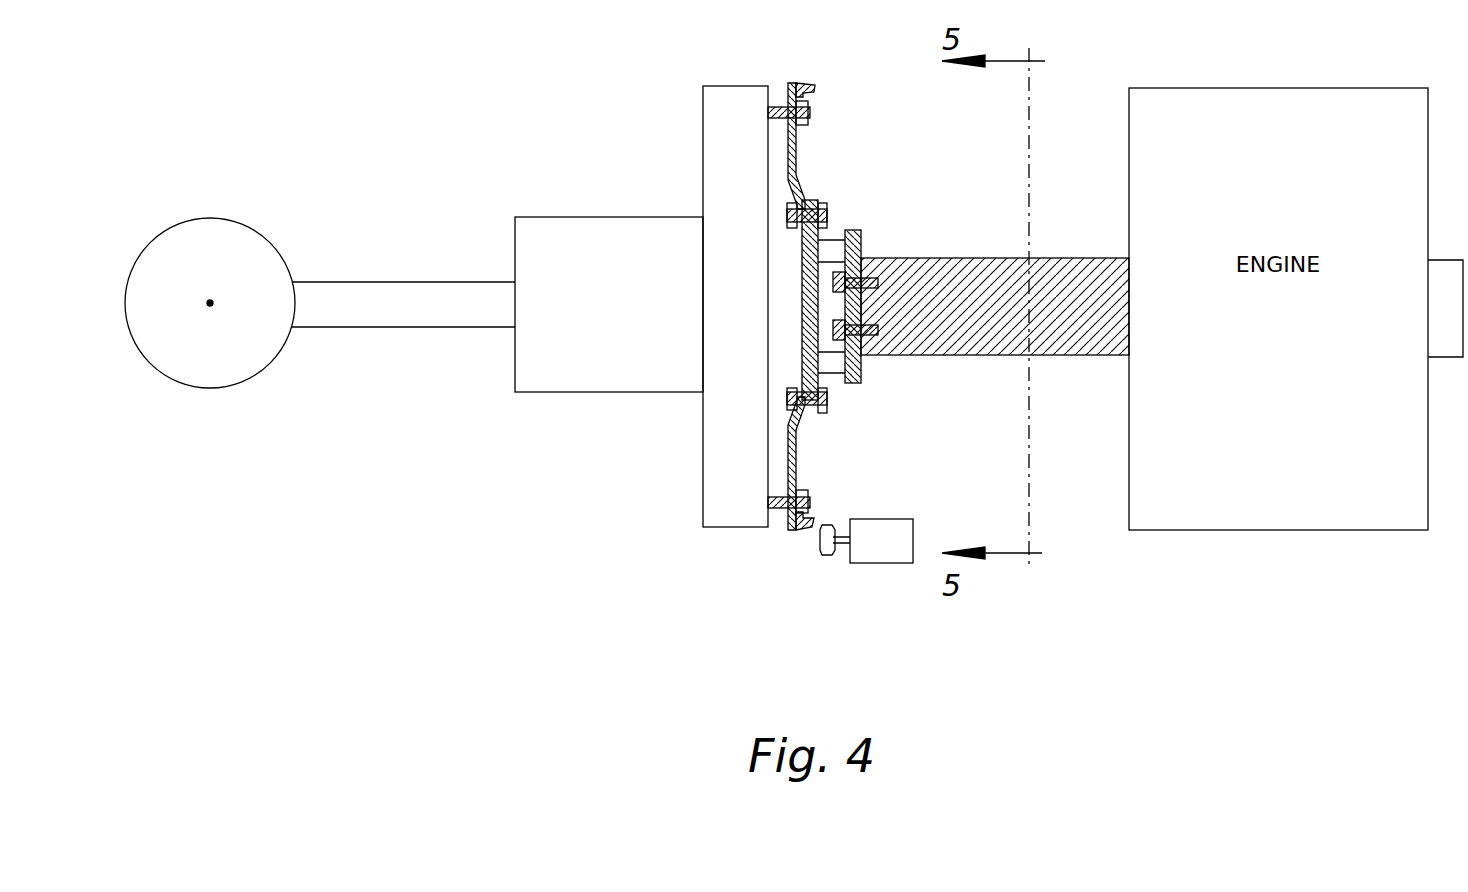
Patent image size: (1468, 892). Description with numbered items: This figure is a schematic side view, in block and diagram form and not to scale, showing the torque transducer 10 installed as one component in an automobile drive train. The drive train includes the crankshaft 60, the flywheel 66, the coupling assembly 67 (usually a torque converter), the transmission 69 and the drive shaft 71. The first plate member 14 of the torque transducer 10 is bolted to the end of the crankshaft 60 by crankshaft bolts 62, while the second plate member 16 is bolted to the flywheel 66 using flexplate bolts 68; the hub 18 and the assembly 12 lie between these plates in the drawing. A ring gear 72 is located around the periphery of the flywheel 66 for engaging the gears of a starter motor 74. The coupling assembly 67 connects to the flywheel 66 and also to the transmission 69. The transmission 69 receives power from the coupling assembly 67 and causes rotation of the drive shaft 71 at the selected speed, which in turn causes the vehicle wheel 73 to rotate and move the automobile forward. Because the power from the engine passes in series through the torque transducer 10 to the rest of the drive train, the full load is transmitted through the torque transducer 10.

The torque transducer 10 is at (938, 138).
The torque sensor assembly 12 is at (850, 410).
The first plate member 14 is at (862, 240).
The second plate member 16 is at (822, 228).
The hub 18 is at (833, 247).
The crankshaft 60 is at (1072, 268).
The crankshaft bolts 62 is at (878, 284).
The flywheel 66 is at (796, 147).
The coupling assembly 67 is at (747, 95).
The flexplate bolts 68 is at (787, 398).
The transmission 69 is at (562, 228).
The drive shaft 71 is at (327, 290).
The ring gear 72 is at (800, 90).
The vehicle wheel 73 is at (237, 232).
The starter motor 74 is at (892, 565).